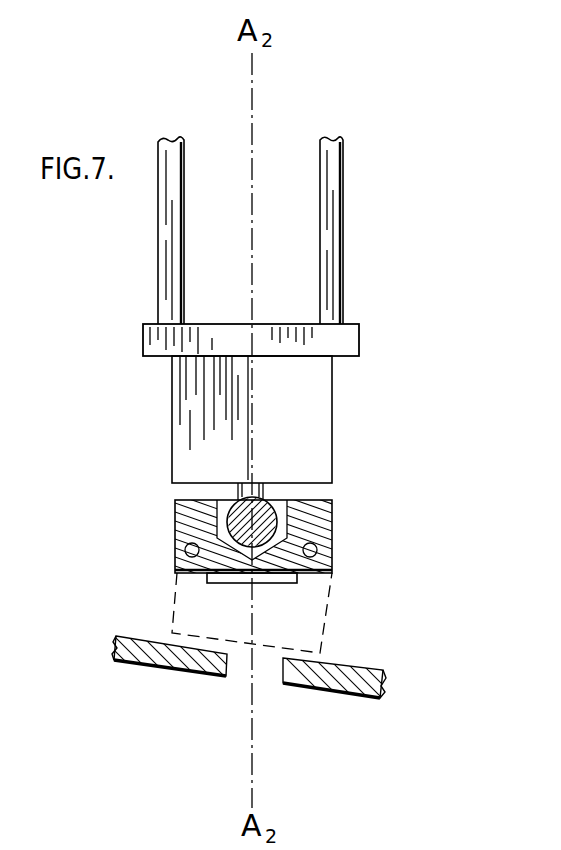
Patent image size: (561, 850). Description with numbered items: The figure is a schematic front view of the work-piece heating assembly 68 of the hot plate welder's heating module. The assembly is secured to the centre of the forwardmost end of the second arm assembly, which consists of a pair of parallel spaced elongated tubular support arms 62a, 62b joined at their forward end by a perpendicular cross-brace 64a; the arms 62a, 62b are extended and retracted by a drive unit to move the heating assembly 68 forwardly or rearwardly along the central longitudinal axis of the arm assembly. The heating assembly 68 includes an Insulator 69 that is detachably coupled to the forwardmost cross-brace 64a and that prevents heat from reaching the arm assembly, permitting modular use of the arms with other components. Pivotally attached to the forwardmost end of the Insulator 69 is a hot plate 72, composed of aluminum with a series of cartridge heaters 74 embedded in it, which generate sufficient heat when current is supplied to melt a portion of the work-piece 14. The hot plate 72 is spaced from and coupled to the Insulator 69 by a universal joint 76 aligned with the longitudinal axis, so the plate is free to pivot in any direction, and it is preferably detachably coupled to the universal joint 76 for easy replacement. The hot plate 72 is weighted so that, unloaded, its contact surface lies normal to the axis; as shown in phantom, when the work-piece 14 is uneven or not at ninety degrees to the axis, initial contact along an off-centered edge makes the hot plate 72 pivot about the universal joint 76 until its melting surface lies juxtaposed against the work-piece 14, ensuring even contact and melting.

The work-piece 14 is at (338, 690).
The tubular support arm 62a is at (330, 226).
The tubular support arm 62b is at (158, 244).
The cross-brace 64a is at (348, 338).
The work-piece heating assembly 68 is at (260, 419).
The Insulator 69 is at (185, 400).
The hot plate 72 is at (175, 516).
The cartridge heaters 74 is at (332, 550).
The universal joint 76 is at (288, 522).